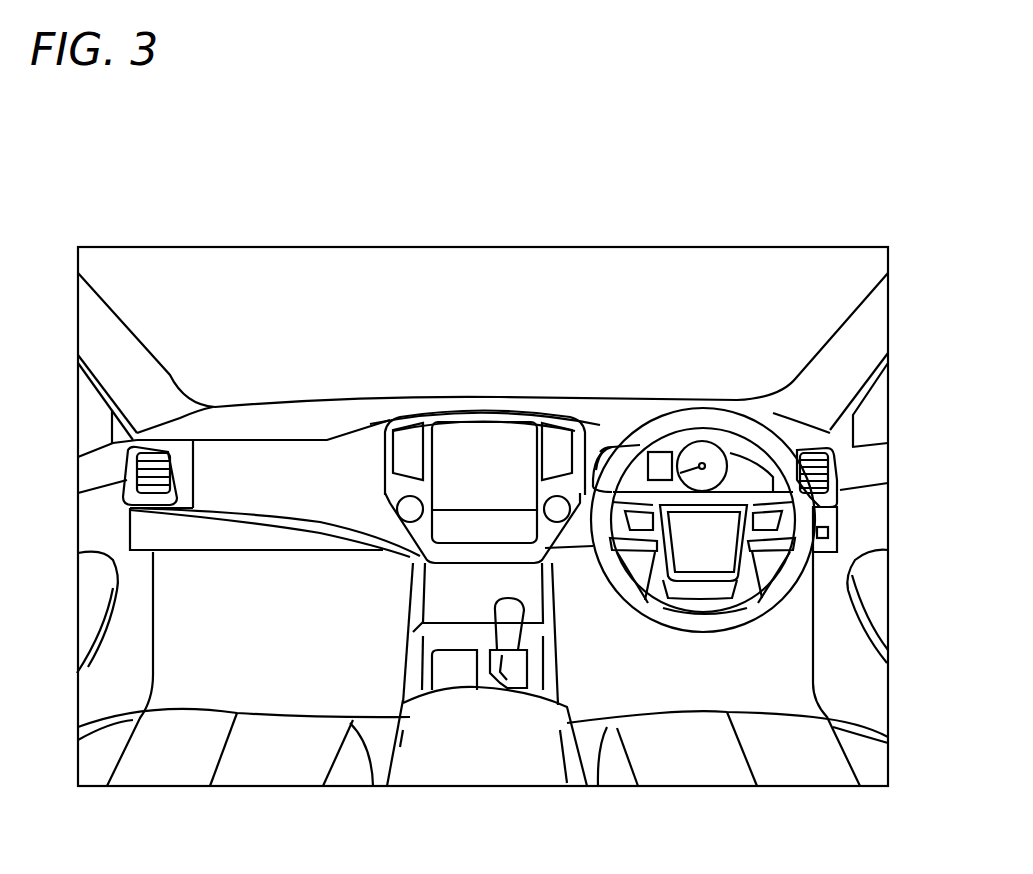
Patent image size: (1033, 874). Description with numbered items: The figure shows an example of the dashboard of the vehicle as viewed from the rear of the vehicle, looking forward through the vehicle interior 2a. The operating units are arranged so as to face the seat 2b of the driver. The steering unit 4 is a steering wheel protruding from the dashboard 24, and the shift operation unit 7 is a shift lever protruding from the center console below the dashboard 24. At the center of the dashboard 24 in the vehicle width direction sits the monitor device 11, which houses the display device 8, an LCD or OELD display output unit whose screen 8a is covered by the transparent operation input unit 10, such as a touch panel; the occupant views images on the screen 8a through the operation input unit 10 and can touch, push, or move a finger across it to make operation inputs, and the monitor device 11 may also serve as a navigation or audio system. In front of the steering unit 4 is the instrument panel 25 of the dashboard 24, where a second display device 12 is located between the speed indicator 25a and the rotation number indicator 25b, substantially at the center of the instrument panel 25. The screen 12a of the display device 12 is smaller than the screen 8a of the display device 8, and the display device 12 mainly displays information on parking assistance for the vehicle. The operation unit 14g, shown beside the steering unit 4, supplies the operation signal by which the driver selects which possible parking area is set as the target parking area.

The vehicle interior 2a is at (285, 265).
The seat 2b is at (690, 777).
The dashboard 24 is at (375, 392).
The monitor device 11 is at (473, 398).
The screen 8a is at (508, 440).
The display device 8 is at (504, 348).
The operation input unit 10 is at (504, 348).
The speed indicator 25a is at (603, 450).
The instrument panel 25 is at (677, 430).
The rotation number indicator 25b is at (703, 450).
The screen 12a is at (659, 470).
The display device 12 is at (651, 301).
The steering unit 4 is at (742, 412).
The operation unit 14g is at (830, 533).
The shift operation unit 7 is at (508, 638).